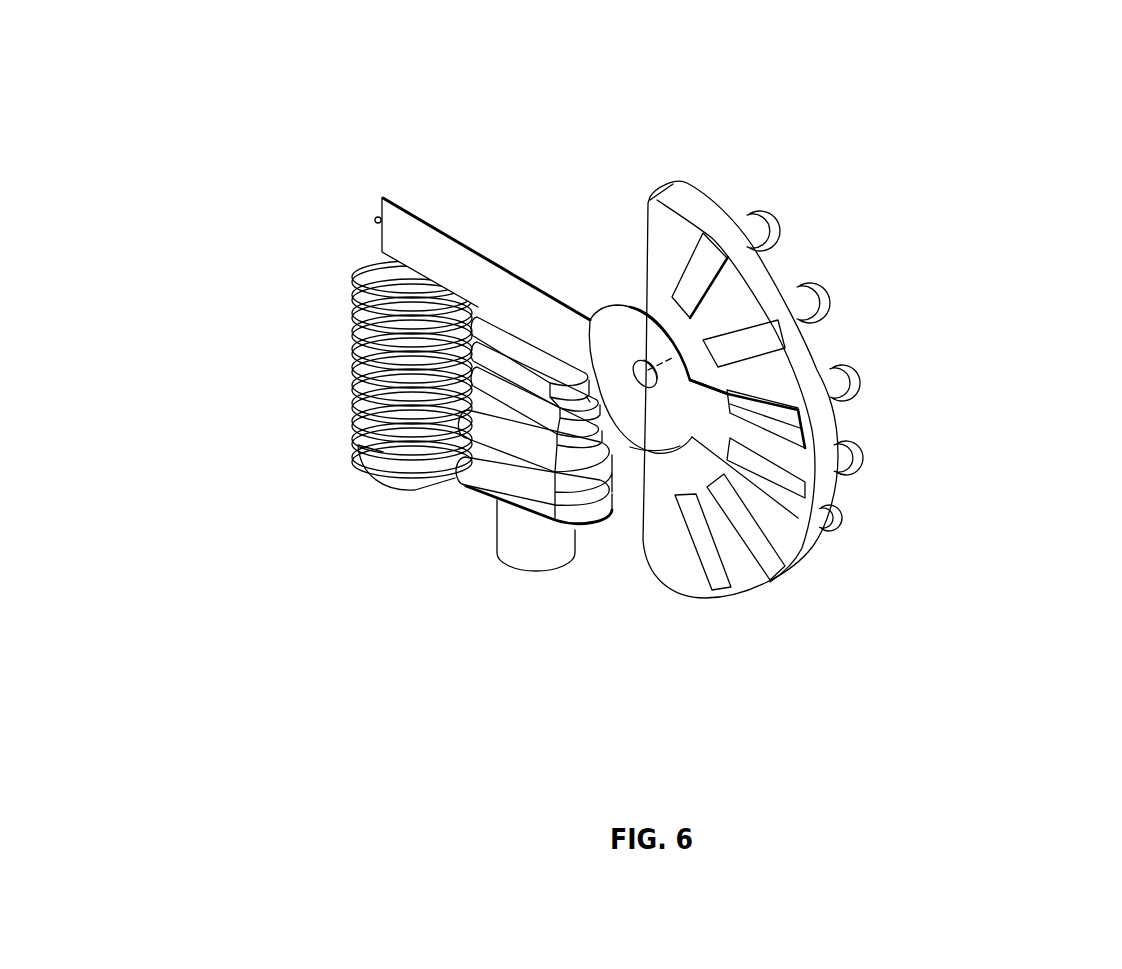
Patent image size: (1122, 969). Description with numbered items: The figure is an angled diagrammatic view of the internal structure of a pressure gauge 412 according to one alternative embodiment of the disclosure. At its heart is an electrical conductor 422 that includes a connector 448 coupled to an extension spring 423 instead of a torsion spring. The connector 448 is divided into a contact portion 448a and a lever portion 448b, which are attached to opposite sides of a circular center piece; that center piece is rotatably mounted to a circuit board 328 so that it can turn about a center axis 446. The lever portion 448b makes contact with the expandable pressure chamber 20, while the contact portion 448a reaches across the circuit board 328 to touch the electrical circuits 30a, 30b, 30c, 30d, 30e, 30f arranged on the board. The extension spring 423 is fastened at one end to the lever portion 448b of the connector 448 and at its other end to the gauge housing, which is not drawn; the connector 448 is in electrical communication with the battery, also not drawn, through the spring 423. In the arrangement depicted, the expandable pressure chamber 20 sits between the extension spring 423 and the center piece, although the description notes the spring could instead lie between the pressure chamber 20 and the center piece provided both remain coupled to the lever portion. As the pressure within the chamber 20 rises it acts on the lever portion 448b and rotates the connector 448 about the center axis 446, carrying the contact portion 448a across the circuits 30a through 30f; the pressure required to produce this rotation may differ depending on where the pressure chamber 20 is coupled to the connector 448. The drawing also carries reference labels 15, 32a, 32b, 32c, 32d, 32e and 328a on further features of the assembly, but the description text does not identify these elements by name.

The cylindrical post 15 is at (460, 587).
The expandable pressure chamber 20 is at (424, 455).
The electrical circuit 30a is at (762, 243).
The electrical circuit 30b is at (796, 294).
The electrical circuit 30c is at (823, 378).
The electrical circuit 30d is at (837, 476).
The electrical circuit 30e is at (812, 531).
The electrical circuit 30f is at (766, 576).
The first pin 32a is at (845, 216).
The second pin 32b is at (887, 292).
The third pin 32c is at (906, 375).
The fourth pin 32d is at (915, 449).
The fifth pin 32e is at (909, 527).
The circuit board 328 is at (724, 456).
The disc rim 328a is at (732, 308).
The pressure gauge 412 is at (728, 172).
The electrical conductor 422 is at (627, 524).
The extension spring 423 is at (286, 381).
The center axis 446 is at (605, 498).
The connector 448 is at (627, 290).
The contact portion 448a is at (884, 448).
The lever portion 448b is at (491, 180).